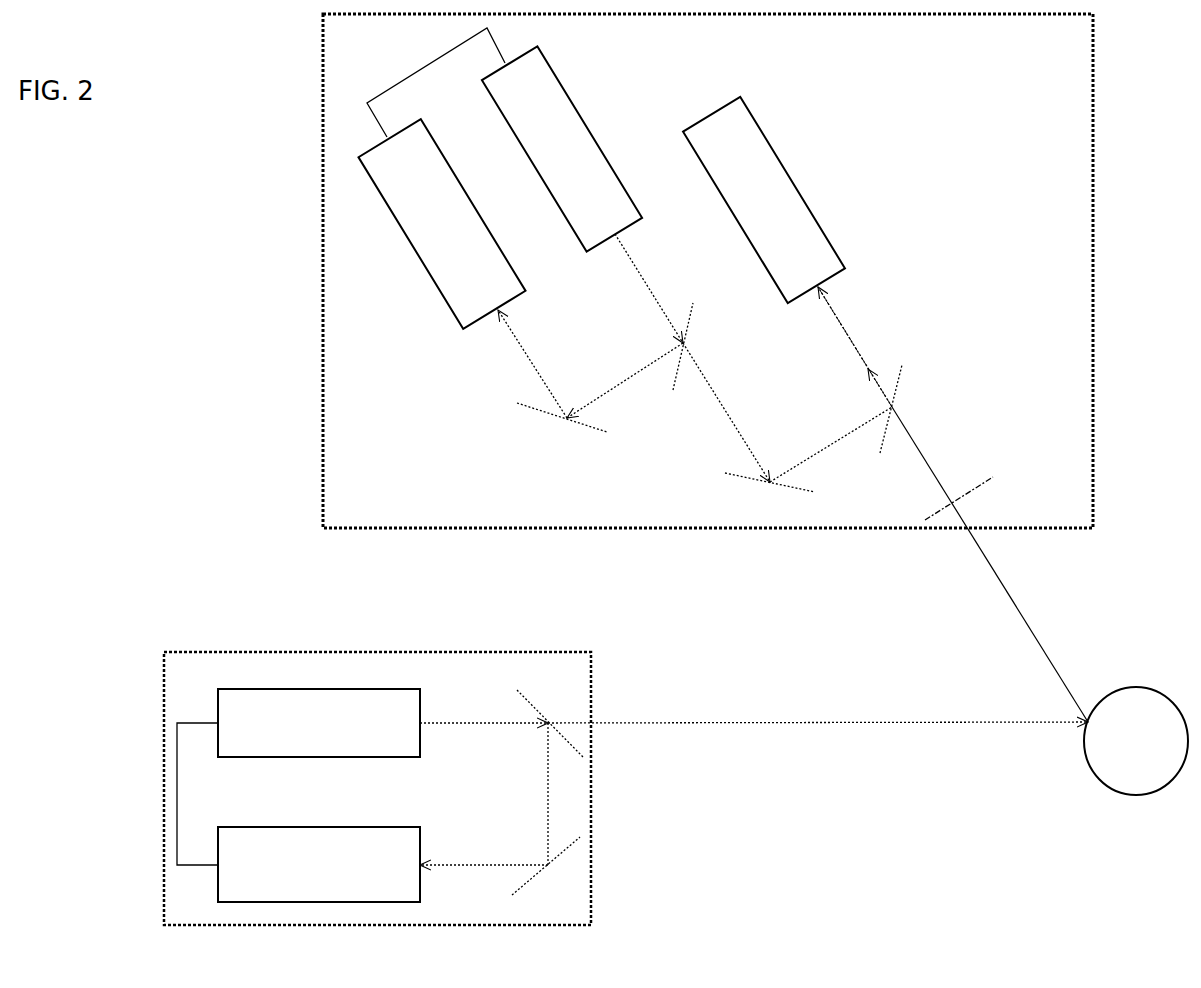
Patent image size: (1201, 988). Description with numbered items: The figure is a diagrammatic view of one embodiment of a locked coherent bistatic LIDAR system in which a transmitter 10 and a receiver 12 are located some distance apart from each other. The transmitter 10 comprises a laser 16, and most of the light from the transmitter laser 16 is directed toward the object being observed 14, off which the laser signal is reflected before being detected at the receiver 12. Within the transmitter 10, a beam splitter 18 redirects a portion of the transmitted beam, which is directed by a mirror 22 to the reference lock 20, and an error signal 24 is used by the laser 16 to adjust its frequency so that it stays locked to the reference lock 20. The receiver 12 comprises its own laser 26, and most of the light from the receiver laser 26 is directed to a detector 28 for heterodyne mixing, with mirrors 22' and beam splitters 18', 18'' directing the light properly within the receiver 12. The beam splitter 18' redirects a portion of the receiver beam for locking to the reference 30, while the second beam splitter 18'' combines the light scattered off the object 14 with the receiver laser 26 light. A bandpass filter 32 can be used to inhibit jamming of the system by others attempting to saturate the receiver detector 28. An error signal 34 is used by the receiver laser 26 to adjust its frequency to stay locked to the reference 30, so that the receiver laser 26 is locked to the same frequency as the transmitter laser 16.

The transmitter 10 is at (183, 647).
The receiver 12 is at (320, 237).
The object being observed 14 is at (1136, 741).
The laser 16 is at (319, 723).
The beam splitter 18 is at (475, 665).
The beam splitter 18' is at (670, 221).
The second beam splitter 18'' is at (1018, 365).
The reference lock 20 is at (319, 864).
The mirror 22 is at (620, 867).
The mirrors 22' is at (646, 455).
The error signal 24 is at (175, 778).
The laser 26 is at (562, 148).
The detector 28 is at (764, 200).
The reference 30 is at (441, 224).
The bandpass filter 32 is at (1002, 473).
The error signal 34 is at (397, 82).